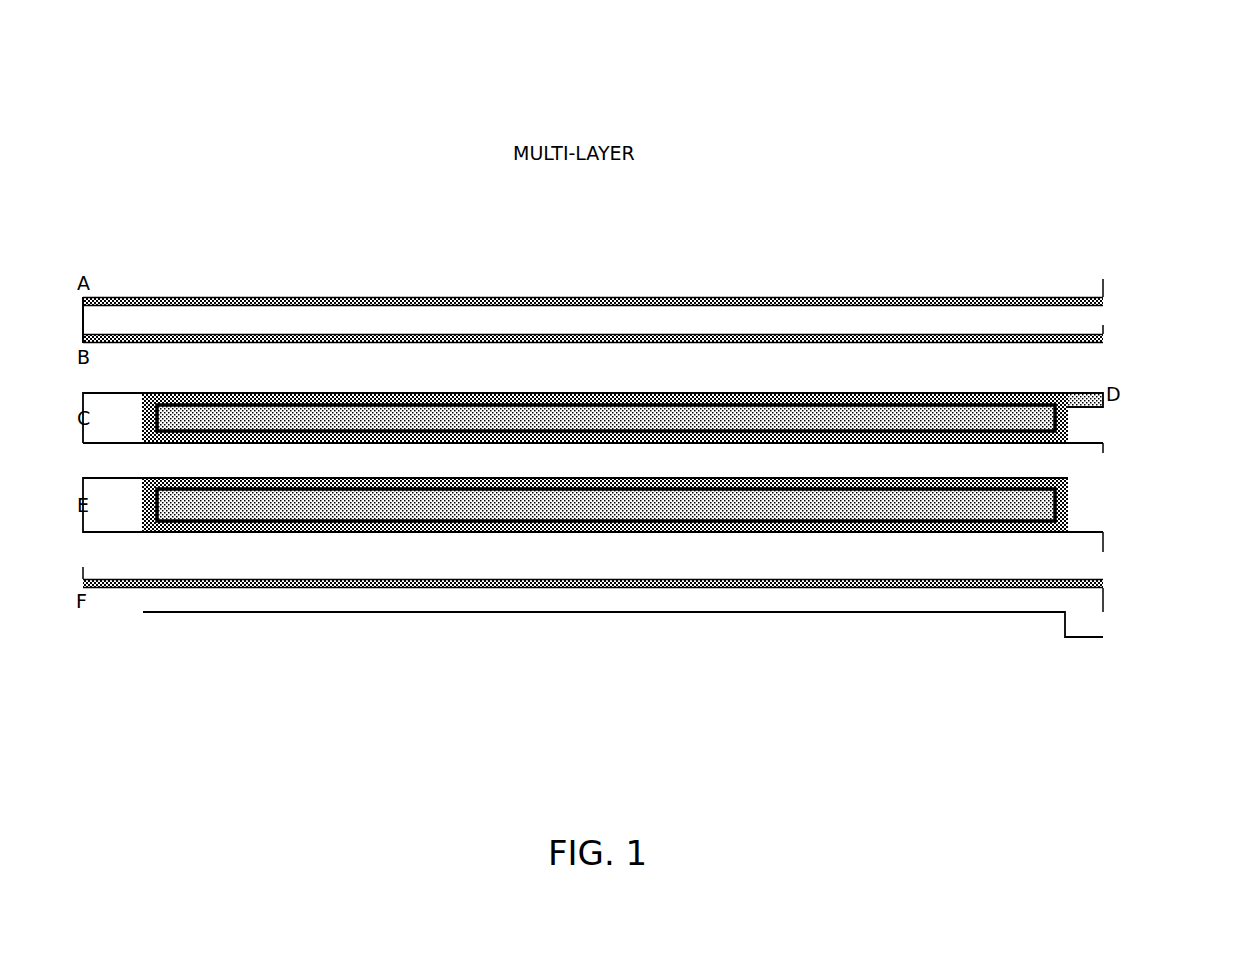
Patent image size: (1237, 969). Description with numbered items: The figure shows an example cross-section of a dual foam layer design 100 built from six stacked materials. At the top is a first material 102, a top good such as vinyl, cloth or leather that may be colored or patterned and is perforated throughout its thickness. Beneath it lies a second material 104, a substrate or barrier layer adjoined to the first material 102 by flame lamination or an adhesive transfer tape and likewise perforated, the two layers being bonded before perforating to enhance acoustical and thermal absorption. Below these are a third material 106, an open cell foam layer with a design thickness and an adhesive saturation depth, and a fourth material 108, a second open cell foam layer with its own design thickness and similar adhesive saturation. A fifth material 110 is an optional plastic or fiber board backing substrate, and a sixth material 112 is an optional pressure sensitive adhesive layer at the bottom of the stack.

The dual foam layer design 100 is at (1149, 77).
The first material 102 is at (1103, 299).
The second material 104 is at (1103, 336).
The third material 106 is at (1103, 443).
The fourth material 108 is at (1103, 532).
The fifth material 110 is at (1103, 580).
The sixth material 112 is at (1103, 637).